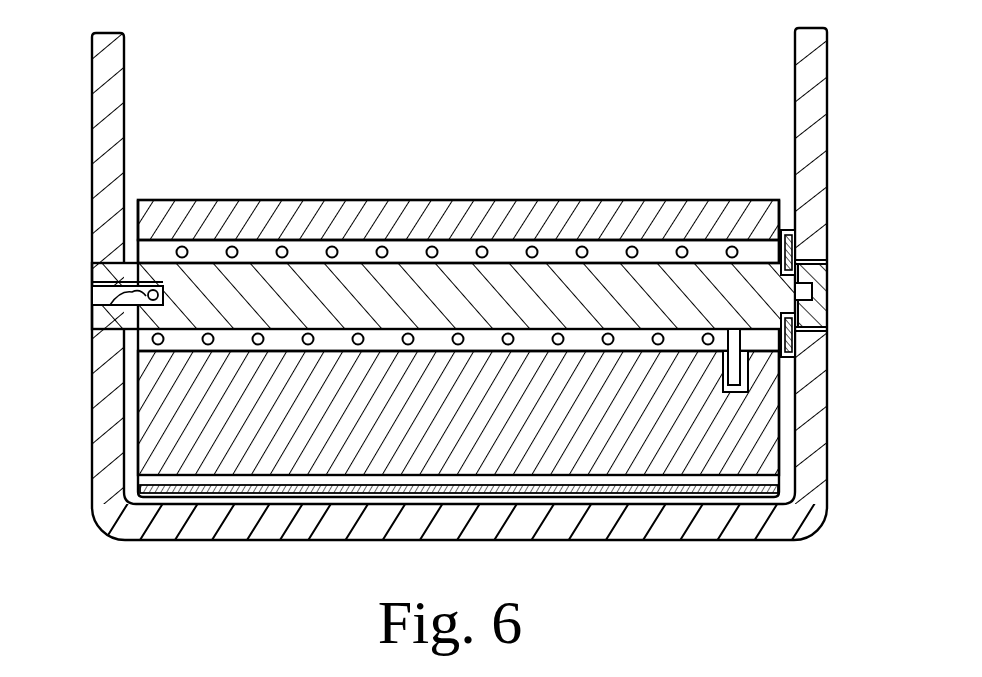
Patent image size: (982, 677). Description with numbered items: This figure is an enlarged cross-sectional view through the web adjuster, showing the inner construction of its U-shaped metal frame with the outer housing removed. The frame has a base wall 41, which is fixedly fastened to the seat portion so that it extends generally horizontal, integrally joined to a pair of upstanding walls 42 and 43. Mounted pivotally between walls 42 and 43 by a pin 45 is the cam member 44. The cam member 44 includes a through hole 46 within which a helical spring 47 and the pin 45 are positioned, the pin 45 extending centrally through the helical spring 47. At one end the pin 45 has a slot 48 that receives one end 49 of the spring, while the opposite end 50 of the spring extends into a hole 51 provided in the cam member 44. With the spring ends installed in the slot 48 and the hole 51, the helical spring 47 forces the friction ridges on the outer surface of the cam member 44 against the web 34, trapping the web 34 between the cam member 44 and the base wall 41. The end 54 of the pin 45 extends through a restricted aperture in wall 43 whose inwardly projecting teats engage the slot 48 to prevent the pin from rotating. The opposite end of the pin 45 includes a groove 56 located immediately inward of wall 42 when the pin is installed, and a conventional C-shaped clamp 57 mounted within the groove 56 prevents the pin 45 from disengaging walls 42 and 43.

The web 34 is at (760, 492).
The base wall 41 is at (695, 527).
The upstanding wall 42 is at (818, 487).
The upstanding wall 43 is at (102, 396).
The cam member 44 is at (328, 200).
The pin 45 is at (560, 268).
The through hole 46 is at (414, 248).
The helical spring 47 is at (738, 246).
The slot 48 is at (92, 342).
The end of the spring 49 is at (97, 284).
The opposite end of the spring 50 is at (738, 374).
The hole 51 is at (800, 400).
The end of the pin 54 is at (100, 275).
The groove 56 is at (820, 284).
The C-shaped clamp 57 is at (798, 232).